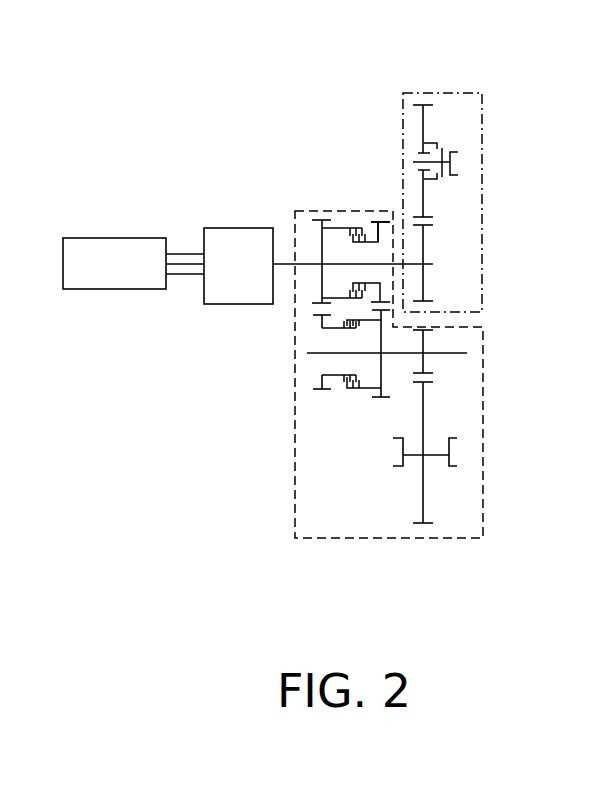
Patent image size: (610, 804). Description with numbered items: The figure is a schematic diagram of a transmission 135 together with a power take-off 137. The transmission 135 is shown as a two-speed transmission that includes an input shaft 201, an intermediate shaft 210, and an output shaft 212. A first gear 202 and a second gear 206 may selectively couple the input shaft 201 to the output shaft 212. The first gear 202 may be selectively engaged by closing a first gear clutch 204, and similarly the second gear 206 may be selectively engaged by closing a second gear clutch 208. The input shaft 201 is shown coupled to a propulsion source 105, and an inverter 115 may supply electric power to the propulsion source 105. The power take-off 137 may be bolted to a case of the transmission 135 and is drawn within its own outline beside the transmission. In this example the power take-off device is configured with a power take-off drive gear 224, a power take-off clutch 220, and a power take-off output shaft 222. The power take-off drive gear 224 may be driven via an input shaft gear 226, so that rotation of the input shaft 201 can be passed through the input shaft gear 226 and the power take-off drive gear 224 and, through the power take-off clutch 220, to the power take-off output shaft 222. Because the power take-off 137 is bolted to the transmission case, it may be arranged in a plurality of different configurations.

The inverter 115 is at (93, 276).
The propulsion source 105 is at (260, 276).
The transmission 135 is at (299, 211).
The power take-off 137 is at (459, 92).
The input shaft 201 is at (288, 264).
The first gear 202 is at (308, 318).
The first gear clutch 204 is at (333, 337).
The second gear 206 is at (385, 216).
The second gear clutch 208 is at (355, 214).
The intermediate shaft 210 is at (470, 356).
The output shaft 212 is at (432, 460).
The power take-off clutch 220 is at (447, 140).
The power take-off output shaft 222 is at (458, 160).
The power take-off drive gear 224 is at (437, 213).
The input shaft gear 226 is at (436, 234).